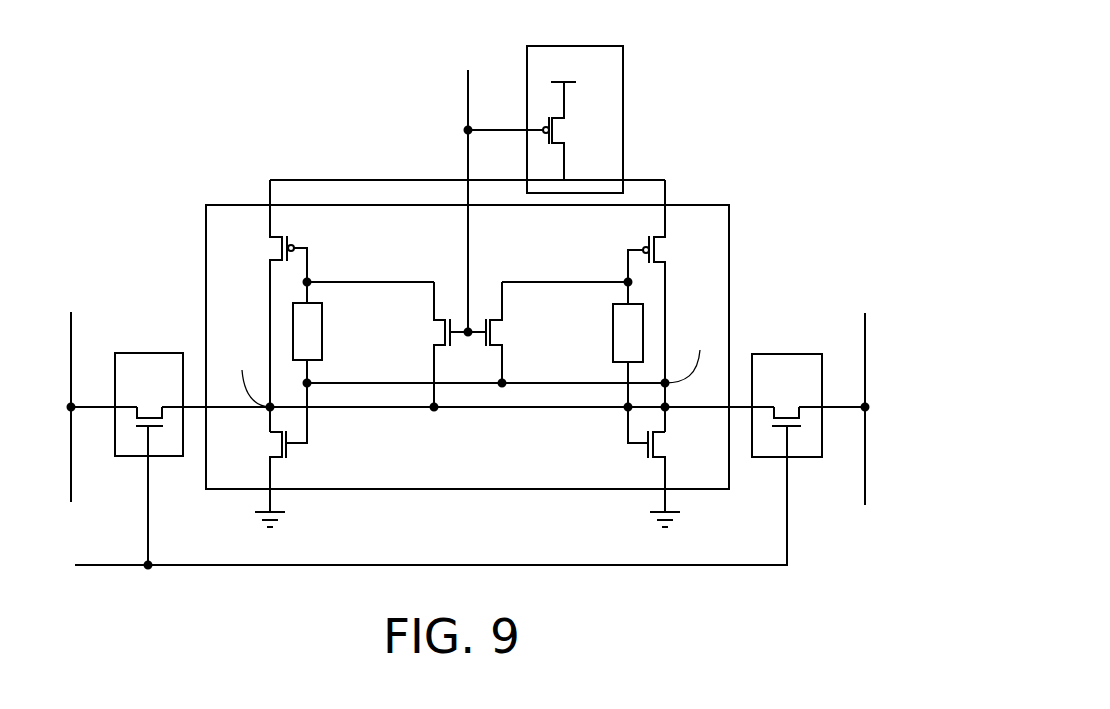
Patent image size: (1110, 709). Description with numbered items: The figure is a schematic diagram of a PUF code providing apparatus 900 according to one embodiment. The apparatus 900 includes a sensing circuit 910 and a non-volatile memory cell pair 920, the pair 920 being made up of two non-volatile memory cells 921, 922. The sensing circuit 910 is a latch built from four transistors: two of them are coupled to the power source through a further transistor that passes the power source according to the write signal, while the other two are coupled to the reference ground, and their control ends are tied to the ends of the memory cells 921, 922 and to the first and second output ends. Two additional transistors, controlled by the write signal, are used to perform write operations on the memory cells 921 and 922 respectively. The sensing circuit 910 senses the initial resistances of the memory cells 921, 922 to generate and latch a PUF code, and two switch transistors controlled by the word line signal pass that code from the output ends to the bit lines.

The PUF code providing apparatus 900 is at (461, 326).
The sensing circuit 910 is at (526, 303).
The non-volatile memory cell pair 920 is at (570, 204).
The non-volatile memory cell 921 is at (323, 318).
The non-volatile memory cell 922 is at (613, 321).